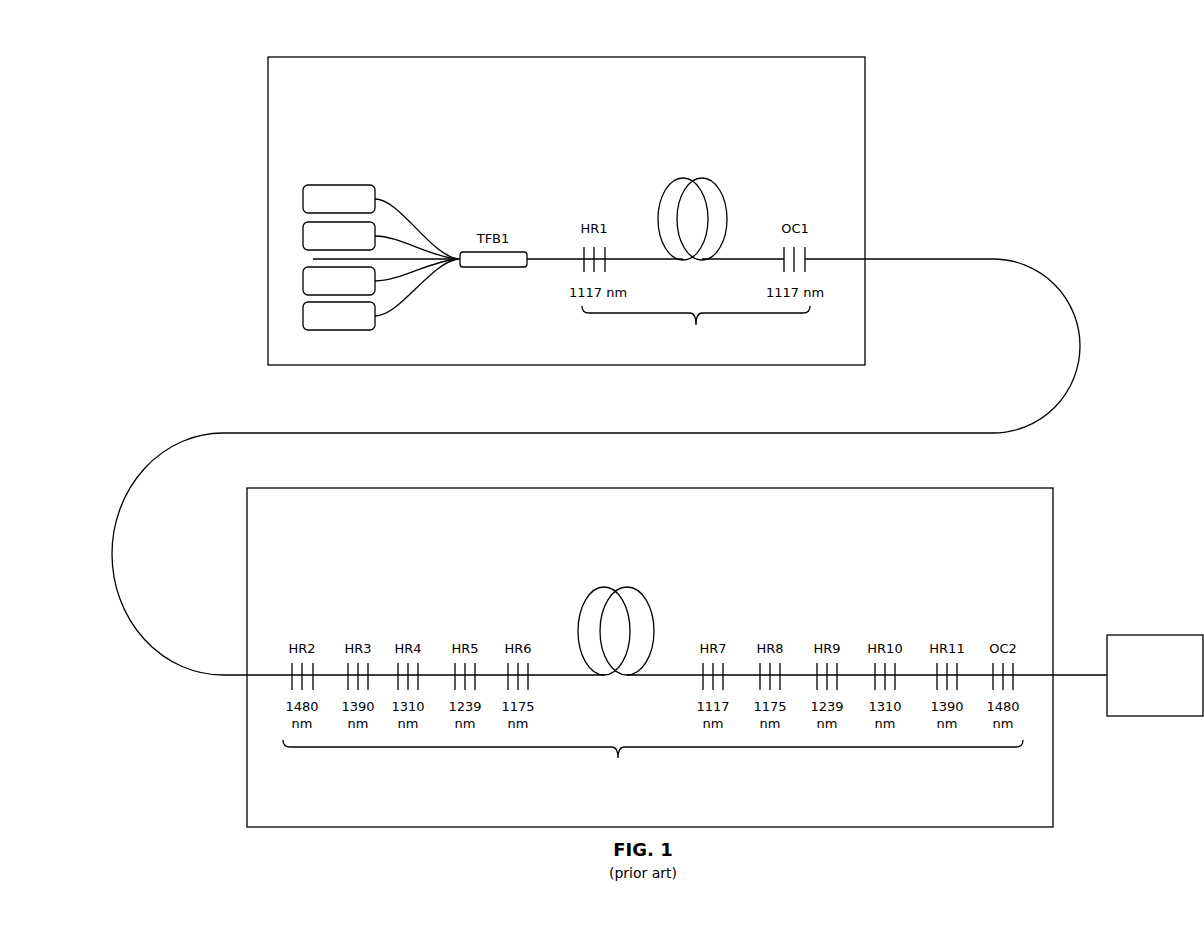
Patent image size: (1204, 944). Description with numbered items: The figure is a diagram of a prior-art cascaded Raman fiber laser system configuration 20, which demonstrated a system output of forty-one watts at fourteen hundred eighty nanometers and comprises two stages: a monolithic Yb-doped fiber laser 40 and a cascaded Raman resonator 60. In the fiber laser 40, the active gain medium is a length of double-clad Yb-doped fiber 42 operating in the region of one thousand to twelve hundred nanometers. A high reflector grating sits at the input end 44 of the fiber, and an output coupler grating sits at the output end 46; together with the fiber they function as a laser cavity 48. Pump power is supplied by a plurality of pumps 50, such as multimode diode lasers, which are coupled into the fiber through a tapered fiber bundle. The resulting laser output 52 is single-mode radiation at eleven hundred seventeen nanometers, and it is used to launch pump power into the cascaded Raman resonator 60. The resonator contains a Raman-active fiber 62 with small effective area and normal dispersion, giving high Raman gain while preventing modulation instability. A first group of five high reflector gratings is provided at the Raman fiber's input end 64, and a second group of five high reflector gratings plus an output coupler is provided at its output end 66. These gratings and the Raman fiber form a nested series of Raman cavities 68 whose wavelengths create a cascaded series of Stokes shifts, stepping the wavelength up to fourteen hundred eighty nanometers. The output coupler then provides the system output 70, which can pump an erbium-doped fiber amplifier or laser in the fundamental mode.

The CRFL system configuration 20 is at (596, 389).
The monolithic Yb-doped fiber laser 40 is at (566, 211).
The double-clad Yb-doped fiber 42 is at (693, 196).
The input end 44 is at (644, 248).
The output end 46 is at (743, 248).
The laser cavity 48 is at (696, 330).
The pumps 50 is at (381, 244).
The laser output 52 is at (899, 248).
The cascaded Raman resonator 60 is at (650, 657).
The Raman-active fiber 62 is at (615, 618).
The input end of Raman fiber 64 is at (566, 663).
The output end of Raman fiber 66 is at (665, 663).
The nested Raman cavities 68 is at (653, 766).
The system output 70 is at (1155, 663).